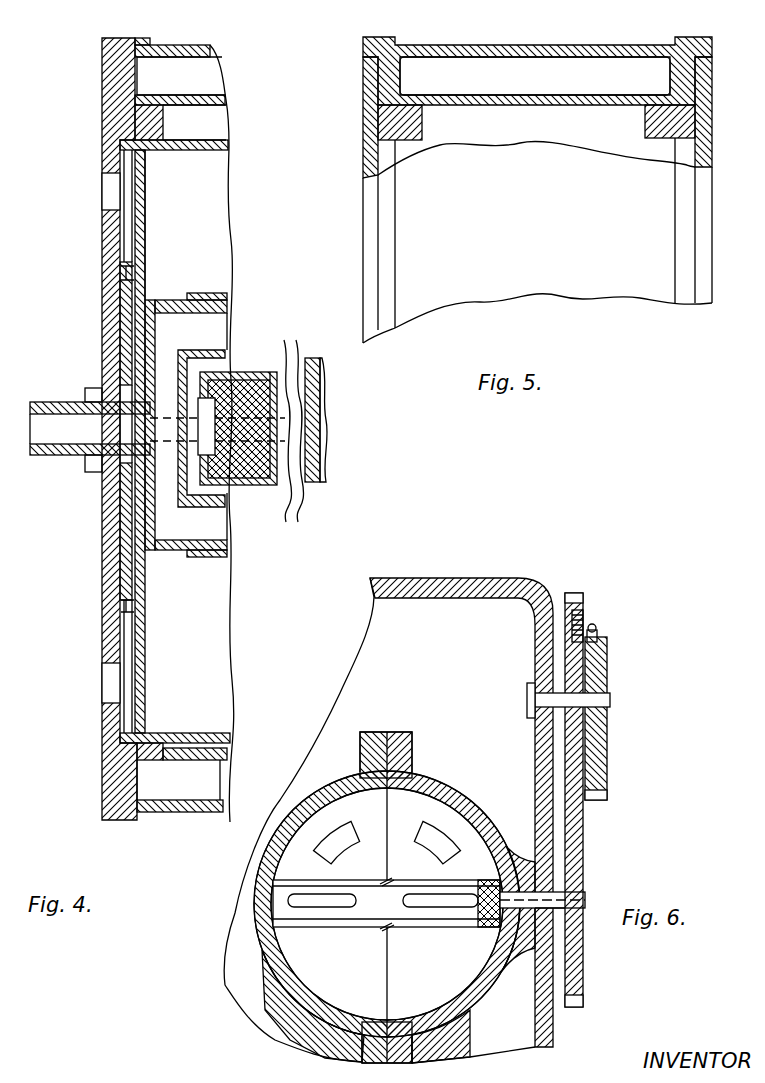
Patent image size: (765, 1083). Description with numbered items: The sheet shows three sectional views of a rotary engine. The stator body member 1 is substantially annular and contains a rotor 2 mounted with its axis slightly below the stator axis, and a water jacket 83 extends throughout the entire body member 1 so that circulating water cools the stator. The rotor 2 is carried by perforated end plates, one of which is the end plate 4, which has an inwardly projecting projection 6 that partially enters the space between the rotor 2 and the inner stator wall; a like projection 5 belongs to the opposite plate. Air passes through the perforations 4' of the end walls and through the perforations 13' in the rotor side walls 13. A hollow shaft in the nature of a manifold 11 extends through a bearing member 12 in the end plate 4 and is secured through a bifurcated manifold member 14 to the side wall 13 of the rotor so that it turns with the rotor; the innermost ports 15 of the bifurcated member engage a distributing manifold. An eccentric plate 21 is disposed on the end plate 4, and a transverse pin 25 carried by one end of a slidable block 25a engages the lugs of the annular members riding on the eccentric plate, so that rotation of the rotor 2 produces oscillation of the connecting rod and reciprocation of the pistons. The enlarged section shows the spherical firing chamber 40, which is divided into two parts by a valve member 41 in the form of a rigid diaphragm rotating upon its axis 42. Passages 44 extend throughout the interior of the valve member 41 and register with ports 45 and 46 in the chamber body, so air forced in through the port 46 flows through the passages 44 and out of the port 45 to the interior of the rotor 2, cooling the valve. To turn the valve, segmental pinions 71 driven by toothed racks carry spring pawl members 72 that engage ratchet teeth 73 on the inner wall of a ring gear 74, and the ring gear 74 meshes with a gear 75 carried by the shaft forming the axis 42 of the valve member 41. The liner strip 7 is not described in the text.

In FIG. 4, the stator body member 1 is at (173, 45).
In FIG. 5, the stator body member 1 is at (485, 55).
In FIG. 4, the rotor 2 is at (125, 150).
In FIG. 5, the rotor 2 is at (405, 160).
In FIG. 4, the end plate 4 is at (89, 429).
In FIG. 4, the perforations 4' is at (83, 444).
In FIG. 5, the projection 5 is at (668, 125).
In FIG. 4, the projection 6 is at (146, 127).
In FIG. 5, the projection 6 is at (410, 125).
In FIG. 4, the lining strip 7 is at (112, 236).
In FIG. 4, the manifold 11 is at (70, 458).
In FIG. 4, the bearing member 12 is at (98, 398).
In FIG. 4, the side wall of the rotor 13 is at (165, 441).
In FIG. 4, the perforations 13' is at (175, 225).
In FIG. 4, the bifurcated manifold member 14 is at (172, 548).
In FIG. 4, the ports 15 is at (210, 305).
In FIG. 4, the eccentric plate 21 is at (127, 322).
In FIG. 4, the transverse pin 25 is at (238, 386).
In FIG. 4, the slidable block 25a is at (270, 368).
In FIG. 5, the water jacket 83 is at (570, 65).
In FIG. 6, the spherical firing chamber 40 is at (292, 983).
In FIG. 6, the valve member 41 is at (370, 910).
In FIG. 6, the axis of the valve member 42 is at (565, 900).
In FIG. 6, the passages 44 is at (330, 900).
In FIG. 6, the port 45 is at (443, 835).
In FIG. 6, the port 46 is at (335, 840).
In FIG. 6, the segmental pinion 71 is at (595, 755).
In FIG. 6, the spring pawl member 72 is at (600, 635).
In FIG. 6, the ratchet teeth 73 is at (585, 620).
In FIG. 6, the ring gear 74 is at (575, 600).
In FIG. 6, the gear 75 is at (605, 822).